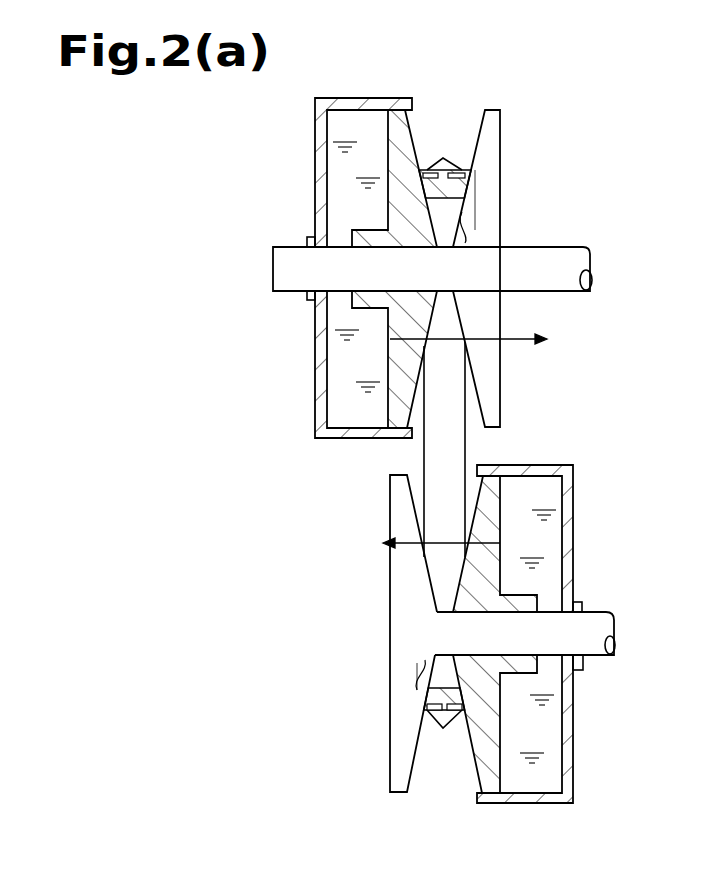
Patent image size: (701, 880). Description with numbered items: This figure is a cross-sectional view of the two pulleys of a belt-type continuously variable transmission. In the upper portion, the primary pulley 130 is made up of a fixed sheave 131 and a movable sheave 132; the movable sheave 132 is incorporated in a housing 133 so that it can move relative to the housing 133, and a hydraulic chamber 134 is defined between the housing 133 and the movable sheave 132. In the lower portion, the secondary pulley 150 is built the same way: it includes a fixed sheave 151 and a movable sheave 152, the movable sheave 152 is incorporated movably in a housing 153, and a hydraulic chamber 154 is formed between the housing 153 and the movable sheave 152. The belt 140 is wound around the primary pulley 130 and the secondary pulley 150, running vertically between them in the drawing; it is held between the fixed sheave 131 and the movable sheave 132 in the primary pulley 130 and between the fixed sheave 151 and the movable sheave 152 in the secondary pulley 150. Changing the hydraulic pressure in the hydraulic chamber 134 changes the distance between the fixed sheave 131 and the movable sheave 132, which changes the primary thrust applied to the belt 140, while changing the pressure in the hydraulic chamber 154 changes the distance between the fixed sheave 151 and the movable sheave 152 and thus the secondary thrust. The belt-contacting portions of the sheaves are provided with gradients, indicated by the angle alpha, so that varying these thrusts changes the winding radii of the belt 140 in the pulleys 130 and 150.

The primary pulley 130 is at (270, 190).
The fixed sheave 131 is at (500, 153).
The movable sheave 132 is at (413, 138).
The housing 133 is at (315, 129).
The hydraulic chamber 134 is at (338, 393).
The belt 140 is at (425, 455).
The secondary pulley 150 is at (336, 756).
The fixed sheave 151 is at (410, 793).
The movable sheave 152 is at (495, 773).
The housing 153 is at (573, 508).
The hydraulic chamber 154 is at (550, 743).